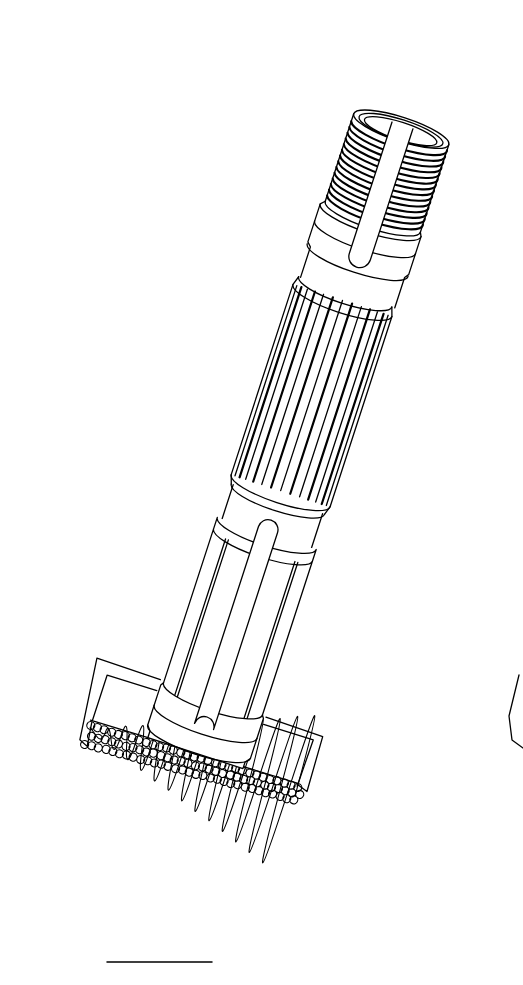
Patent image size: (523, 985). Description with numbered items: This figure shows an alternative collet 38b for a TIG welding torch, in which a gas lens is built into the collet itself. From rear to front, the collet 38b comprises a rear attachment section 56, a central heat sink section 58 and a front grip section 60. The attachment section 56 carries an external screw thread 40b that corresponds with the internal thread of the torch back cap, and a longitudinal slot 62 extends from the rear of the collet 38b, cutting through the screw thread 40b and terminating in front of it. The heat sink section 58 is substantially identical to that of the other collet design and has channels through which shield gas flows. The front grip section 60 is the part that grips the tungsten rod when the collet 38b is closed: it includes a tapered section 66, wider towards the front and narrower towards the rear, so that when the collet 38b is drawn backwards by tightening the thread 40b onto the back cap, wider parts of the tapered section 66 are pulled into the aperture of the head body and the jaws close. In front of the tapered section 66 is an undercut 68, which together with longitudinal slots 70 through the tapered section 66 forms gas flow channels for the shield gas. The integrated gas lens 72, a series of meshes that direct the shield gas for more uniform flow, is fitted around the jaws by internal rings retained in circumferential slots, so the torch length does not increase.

The collet 38b is at (219, 122).
The external screw thread 40b is at (343, 130).
The rear attachment section 56 is at (471, 142).
The heat sink section 58 is at (421, 309).
The front grip section 60 is at (132, 487).
The longitudinal slot 62 is at (356, 246).
The tapered section 66 is at (271, 684).
The undercut 68 is at (262, 786).
The longitudinal slots 70 is at (247, 616).
The integrated gas lens 72 is at (313, 766).